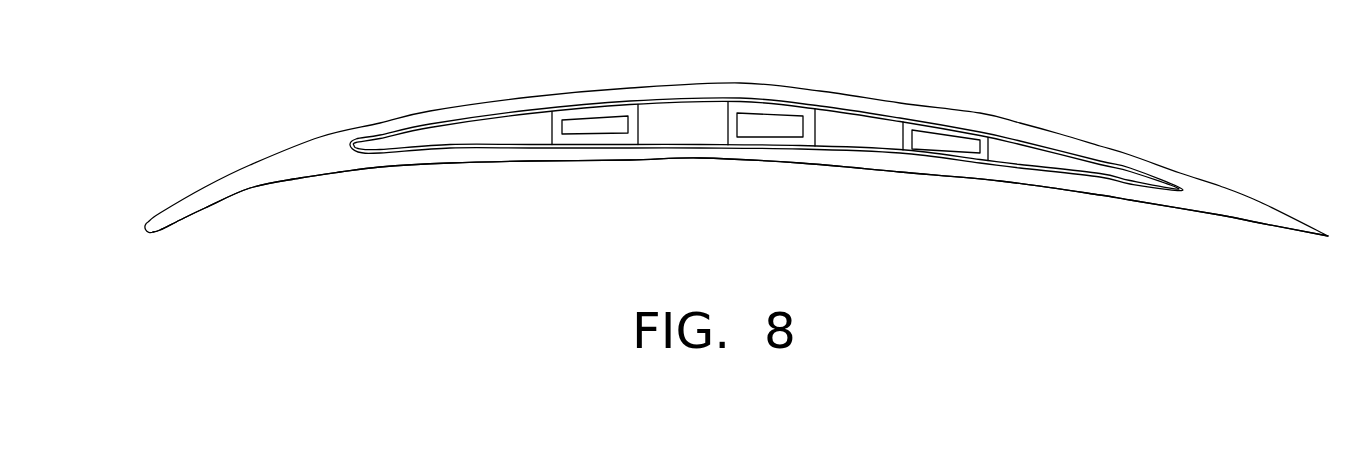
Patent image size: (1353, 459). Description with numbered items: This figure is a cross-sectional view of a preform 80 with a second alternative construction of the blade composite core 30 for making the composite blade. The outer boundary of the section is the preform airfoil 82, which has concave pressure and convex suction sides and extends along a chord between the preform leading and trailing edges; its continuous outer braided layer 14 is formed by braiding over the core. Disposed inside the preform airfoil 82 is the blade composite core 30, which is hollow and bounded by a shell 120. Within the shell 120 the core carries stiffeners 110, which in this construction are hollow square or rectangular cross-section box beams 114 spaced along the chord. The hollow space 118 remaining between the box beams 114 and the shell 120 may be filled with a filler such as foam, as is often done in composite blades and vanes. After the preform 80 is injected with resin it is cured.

The continuous outer braided layer 14 is at (453, 112).
The blade composite core 30 is at (893, 112).
The preform 80 is at (736, 167).
The preform airfoil 82 is at (1028, 189).
The stiffeners 110 is at (1006, 138).
The box beams 114 is at (712, 112).
The hollow space 118 is at (827, 122).
The shell 120 is at (403, 130).